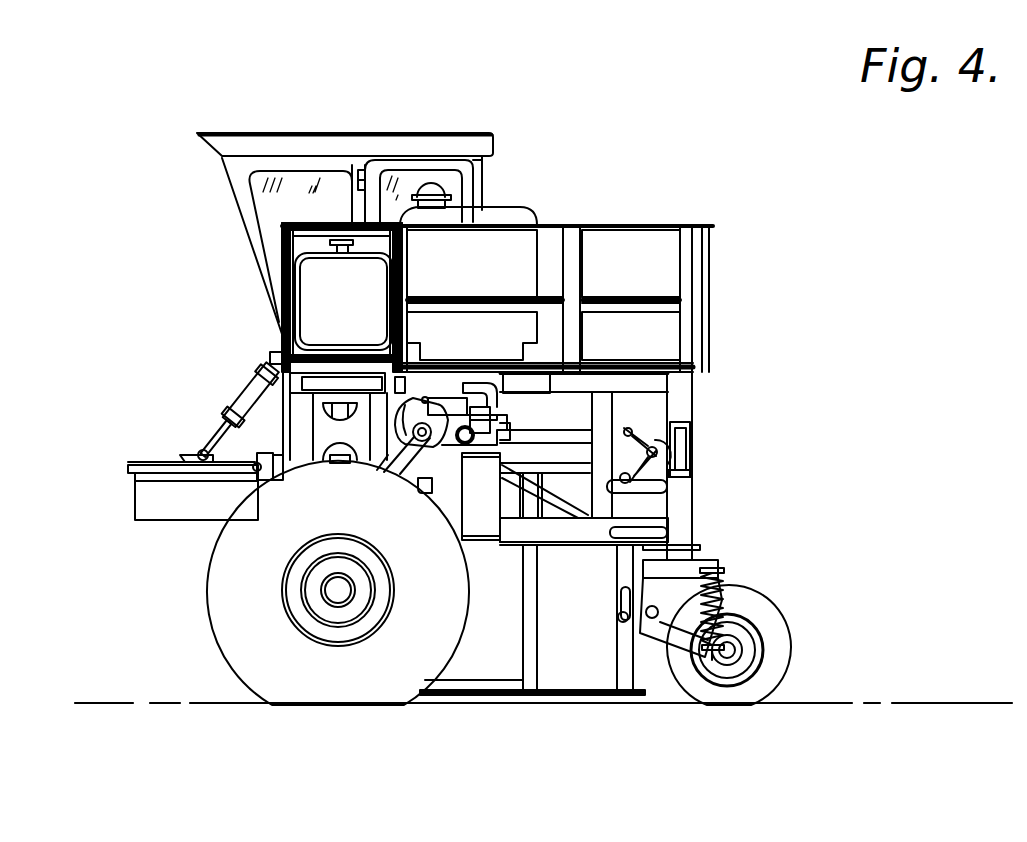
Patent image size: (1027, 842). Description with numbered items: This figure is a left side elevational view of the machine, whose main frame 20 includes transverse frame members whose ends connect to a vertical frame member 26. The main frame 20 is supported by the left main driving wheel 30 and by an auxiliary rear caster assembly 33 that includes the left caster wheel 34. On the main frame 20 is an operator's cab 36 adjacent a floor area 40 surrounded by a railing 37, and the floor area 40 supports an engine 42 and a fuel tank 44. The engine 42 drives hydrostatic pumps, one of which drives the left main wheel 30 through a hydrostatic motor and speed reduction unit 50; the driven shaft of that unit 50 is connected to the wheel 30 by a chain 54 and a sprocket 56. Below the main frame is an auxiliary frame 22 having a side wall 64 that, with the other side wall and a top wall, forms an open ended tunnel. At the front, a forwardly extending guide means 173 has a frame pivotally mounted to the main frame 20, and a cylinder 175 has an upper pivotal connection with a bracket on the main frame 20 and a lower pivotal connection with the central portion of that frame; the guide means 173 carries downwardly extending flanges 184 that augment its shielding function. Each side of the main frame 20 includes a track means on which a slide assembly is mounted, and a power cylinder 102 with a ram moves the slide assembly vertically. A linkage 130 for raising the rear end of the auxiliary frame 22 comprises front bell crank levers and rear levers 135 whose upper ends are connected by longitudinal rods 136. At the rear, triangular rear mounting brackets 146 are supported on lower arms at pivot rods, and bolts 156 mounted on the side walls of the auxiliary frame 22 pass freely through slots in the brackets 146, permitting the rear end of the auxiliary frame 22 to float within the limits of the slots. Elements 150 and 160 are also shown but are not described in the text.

The main frame 20 is at (697, 383).
The auxiliary frame 22 is at (595, 702).
The vertical frame member 26 is at (303, 467).
The left main wheel 30 is at (223, 622).
The auxiliary rear caster assembly 33 is at (713, 562).
The left caster wheel 34 is at (782, 632).
The operator's cab 36 is at (330, 140).
The railing 37 is at (642, 226).
The floor area 40 is at (630, 372).
The engine 42 is at (510, 214).
The fuel tank 44 is at (315, 285).
The hydrostatic motor and speed reduction unit 50 is at (427, 397).
The chain 54 is at (433, 487).
The sprocket 56 is at (407, 472).
The side wall 64 is at (463, 680).
The power cylinder 102 is at (253, 407).
The linkage 130 is at (568, 424).
The rear lever 135 is at (638, 430).
The longitudinal rod 136 is at (527, 435).
The rear mounting bracket 146 is at (625, 565).
The slot 150 is at (620, 600).
The bolt 156 is at (620, 620).
The cross bar 160 is at (667, 492).
The guide means 173 is at (150, 460).
The cylinder 175 is at (262, 365).
The flange 184 is at (143, 503).